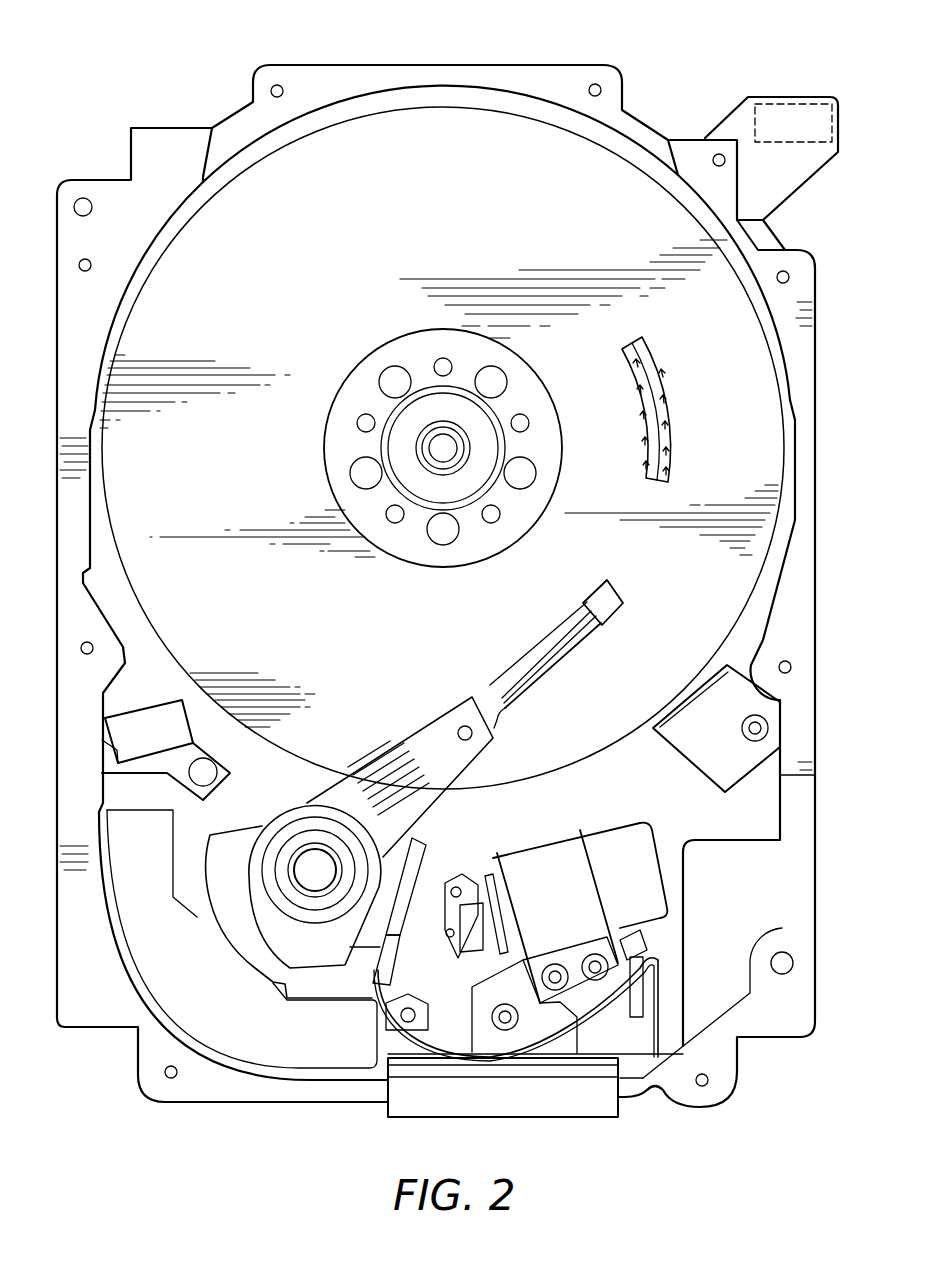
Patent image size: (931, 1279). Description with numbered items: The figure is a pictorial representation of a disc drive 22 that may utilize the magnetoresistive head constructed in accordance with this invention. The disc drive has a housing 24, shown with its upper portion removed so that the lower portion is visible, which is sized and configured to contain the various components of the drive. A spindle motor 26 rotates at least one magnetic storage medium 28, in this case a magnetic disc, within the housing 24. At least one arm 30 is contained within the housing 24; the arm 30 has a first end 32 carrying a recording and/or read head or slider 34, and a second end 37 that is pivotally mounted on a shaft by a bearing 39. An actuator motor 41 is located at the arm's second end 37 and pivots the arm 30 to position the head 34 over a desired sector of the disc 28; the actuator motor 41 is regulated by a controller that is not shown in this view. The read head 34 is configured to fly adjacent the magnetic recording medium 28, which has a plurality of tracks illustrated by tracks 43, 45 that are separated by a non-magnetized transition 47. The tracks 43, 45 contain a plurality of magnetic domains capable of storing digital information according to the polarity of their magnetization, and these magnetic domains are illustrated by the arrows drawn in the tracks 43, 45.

The disc drive 22 is at (102, 116).
The housing 24 is at (573, 78).
The spindle motor 26 is at (437, 452).
The magnetic storage medium 28 is at (352, 237).
The arm 30 is at (428, 748).
The first end 32 is at (552, 634).
The read head 34 is at (606, 596).
The second end 37 is at (340, 807).
The bearing 39 is at (303, 860).
The actuator motor 41 is at (208, 993).
The track 43 is at (646, 352).
The track 45 is at (627, 365).
The non-magnetized transition 47 is at (657, 396).